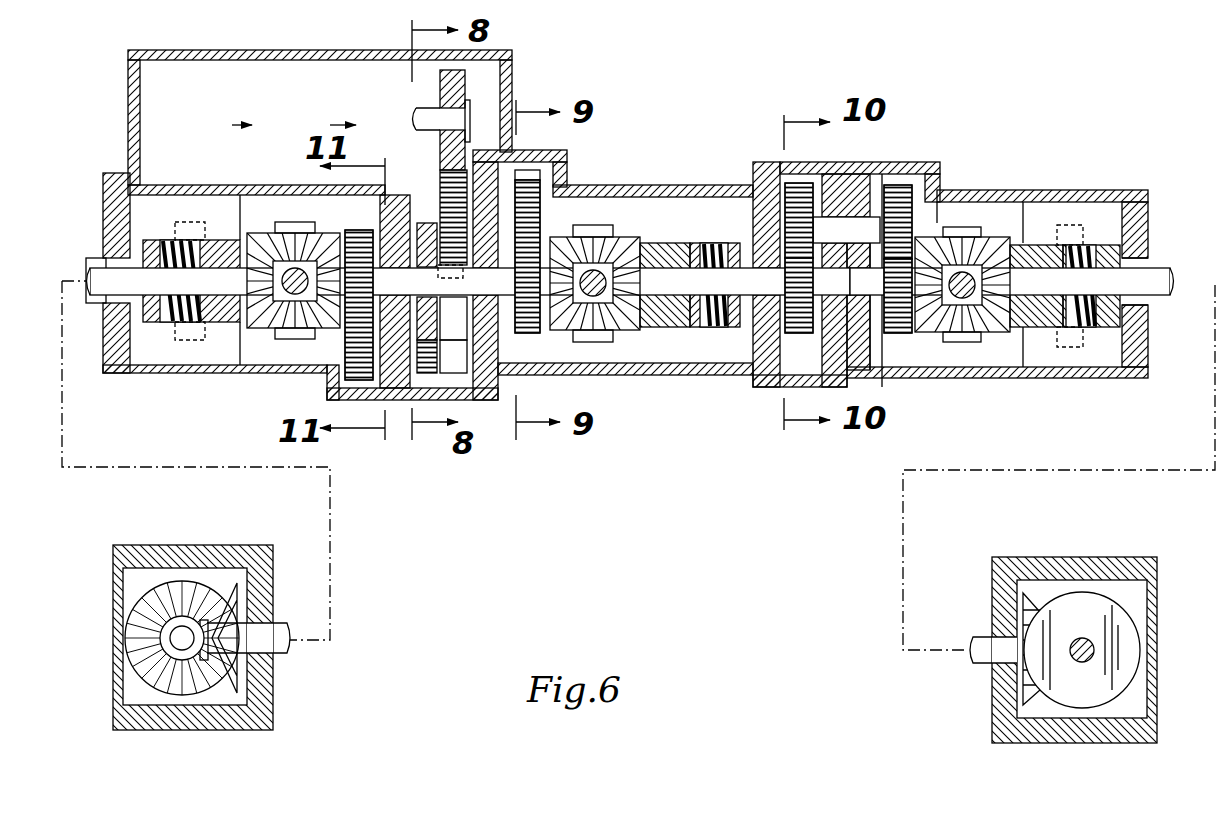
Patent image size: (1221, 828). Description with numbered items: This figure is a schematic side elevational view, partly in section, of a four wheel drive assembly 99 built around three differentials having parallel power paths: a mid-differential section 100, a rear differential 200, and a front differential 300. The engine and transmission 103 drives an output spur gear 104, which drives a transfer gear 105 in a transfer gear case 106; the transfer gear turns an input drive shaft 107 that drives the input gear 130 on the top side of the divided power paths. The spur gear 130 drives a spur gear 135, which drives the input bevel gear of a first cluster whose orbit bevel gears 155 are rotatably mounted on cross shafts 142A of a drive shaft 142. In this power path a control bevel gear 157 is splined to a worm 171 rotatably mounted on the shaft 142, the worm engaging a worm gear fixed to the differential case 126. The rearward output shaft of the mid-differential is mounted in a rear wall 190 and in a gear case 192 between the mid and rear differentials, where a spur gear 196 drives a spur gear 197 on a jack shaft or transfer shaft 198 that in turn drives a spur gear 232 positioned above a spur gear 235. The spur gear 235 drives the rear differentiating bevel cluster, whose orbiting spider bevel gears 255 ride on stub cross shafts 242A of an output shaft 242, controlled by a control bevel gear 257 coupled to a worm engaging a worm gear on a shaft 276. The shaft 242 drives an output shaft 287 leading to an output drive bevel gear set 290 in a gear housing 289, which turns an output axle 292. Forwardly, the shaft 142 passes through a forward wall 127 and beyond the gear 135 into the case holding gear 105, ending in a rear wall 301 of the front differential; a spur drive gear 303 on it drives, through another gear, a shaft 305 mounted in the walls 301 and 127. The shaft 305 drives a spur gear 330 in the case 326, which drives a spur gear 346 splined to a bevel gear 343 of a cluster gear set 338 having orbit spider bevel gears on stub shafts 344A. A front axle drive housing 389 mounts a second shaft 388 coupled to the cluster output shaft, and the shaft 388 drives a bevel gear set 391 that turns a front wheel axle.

The four wheel drive assembly 99 is at (118, 156).
The mid-differential section 100 is at (652, 186).
The engine and transmission 103 is at (320, 72).
The output spur gear 104 is at (466, 80).
The transfer gear 105 is at (442, 168).
The transfer gear case 106 is at (480, 150).
The input drive shaft 107 is at (427, 218).
The differential case 126 is at (652, 376).
The forward wall 127 is at (496, 185).
The input gear 130 is at (540, 182).
The spur gear 135 is at (520, 335).
The drive shaft 142 is at (469, 280).
The cross shafts 142A is at (594, 226).
The orbit bevel gears 155 is at (620, 237).
The control bevel gear 157 is at (652, 245).
The worm 171 is at (713, 243).
The rear wall 190 is at (752, 205).
The gear case 192 is at (825, 164).
The spur gear 196 is at (803, 333).
The spur gear 197 is at (795, 183).
The jack shaft or transfer shaft 198 is at (846, 230).
The rear differential 200 is at (1038, 190).
The spur gear 232 is at (897, 183).
The spur gear 235 is at (900, 334).
The output shaft 242 is at (1042, 270).
The stub cross shafts 242A is at (965, 227).
The orbiting spider bevel gears 255 is at (997, 243).
The control bevel gear 257 is at (1010, 330).
The shaft 276 is at (1105, 195).
The output shaft 287 is at (970, 664).
The gear housing 289 is at (1110, 558).
The output drive bevel gear set 290 is at (1045, 598).
The output axle 292 is at (1082, 637).
The front differential 300 is at (190, 373).
The rear wall 301 is at (395, 390).
The spur drive gear 303 is at (456, 318).
The shaft 305 is at (456, 356).
The case 326 is at (183, 186).
The spur gear 330 is at (325, 372).
The cluster gear set 338 is at (297, 220).
The bevel gear 343 is at (318, 328).
The stub shafts 344A is at (287, 225).
The spur gear 346 is at (352, 229).
The second shaft 388 is at (272, 646).
The front axle drive housing 389 is at (190, 556).
The bevel gear set 391 is at (150, 633).